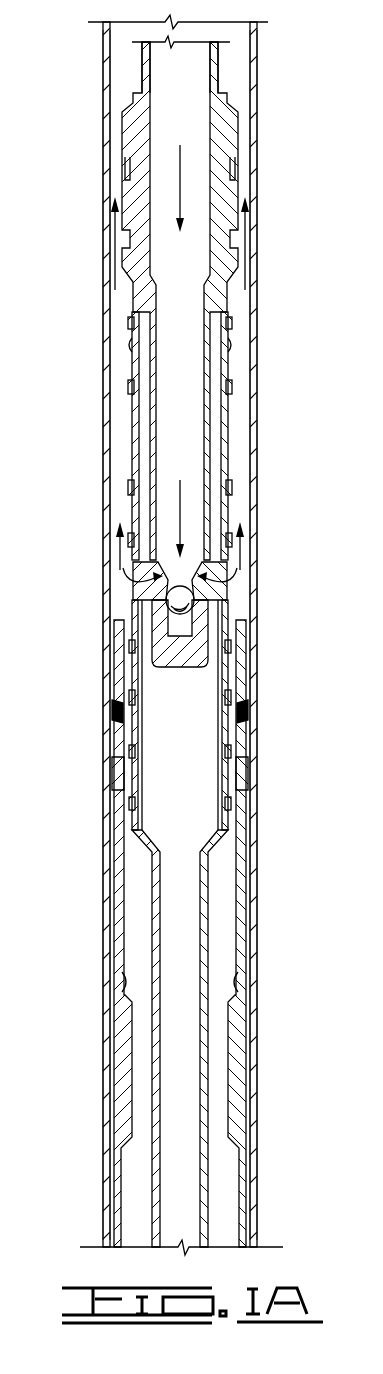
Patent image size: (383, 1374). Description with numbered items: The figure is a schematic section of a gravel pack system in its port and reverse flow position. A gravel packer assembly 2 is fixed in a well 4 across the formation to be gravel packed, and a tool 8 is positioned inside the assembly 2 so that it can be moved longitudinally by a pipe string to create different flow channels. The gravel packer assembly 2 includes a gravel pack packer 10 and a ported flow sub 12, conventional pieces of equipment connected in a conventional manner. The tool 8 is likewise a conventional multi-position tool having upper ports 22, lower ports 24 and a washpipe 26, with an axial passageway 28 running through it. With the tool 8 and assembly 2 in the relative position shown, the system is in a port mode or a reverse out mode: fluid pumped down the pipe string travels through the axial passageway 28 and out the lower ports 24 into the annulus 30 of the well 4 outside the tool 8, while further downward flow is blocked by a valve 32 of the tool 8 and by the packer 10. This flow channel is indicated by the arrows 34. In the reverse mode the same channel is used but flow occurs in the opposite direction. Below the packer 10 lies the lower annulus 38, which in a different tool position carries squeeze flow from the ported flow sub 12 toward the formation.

The gravel packer assembly 2 is at (262, 920).
The well 4 is at (262, 946).
The tool 8 is at (230, 100).
The gravel pack packer 10 is at (260, 690).
The ported flow sub 12 is at (262, 1021).
The upper ports 22 is at (137, 347).
The lower ports 24 is at (142, 588).
The washpipe 26 is at (210, 1097).
The axial passageway 28 is at (192, 63).
The annulus 30 is at (243, 452).
The valve 32 is at (188, 645).
The arrows 34 is at (248, 230).
The lower annulus 38 is at (254, 1197).